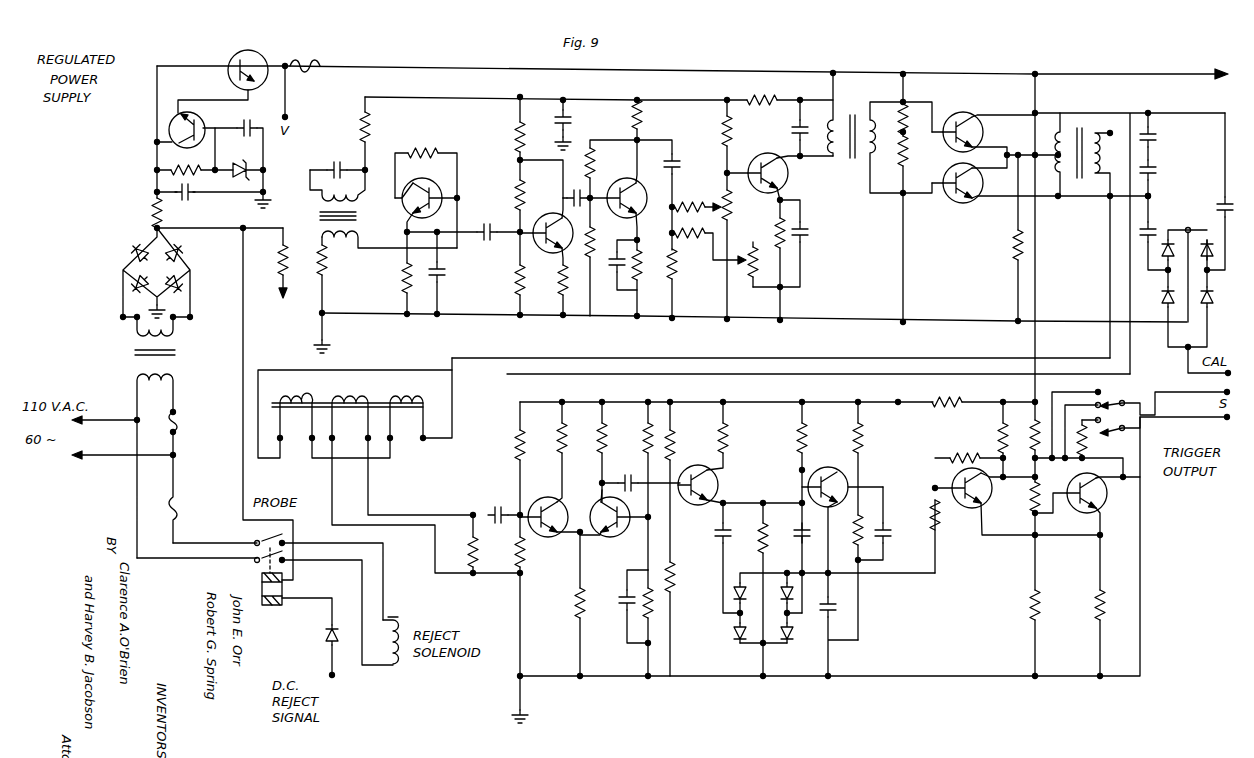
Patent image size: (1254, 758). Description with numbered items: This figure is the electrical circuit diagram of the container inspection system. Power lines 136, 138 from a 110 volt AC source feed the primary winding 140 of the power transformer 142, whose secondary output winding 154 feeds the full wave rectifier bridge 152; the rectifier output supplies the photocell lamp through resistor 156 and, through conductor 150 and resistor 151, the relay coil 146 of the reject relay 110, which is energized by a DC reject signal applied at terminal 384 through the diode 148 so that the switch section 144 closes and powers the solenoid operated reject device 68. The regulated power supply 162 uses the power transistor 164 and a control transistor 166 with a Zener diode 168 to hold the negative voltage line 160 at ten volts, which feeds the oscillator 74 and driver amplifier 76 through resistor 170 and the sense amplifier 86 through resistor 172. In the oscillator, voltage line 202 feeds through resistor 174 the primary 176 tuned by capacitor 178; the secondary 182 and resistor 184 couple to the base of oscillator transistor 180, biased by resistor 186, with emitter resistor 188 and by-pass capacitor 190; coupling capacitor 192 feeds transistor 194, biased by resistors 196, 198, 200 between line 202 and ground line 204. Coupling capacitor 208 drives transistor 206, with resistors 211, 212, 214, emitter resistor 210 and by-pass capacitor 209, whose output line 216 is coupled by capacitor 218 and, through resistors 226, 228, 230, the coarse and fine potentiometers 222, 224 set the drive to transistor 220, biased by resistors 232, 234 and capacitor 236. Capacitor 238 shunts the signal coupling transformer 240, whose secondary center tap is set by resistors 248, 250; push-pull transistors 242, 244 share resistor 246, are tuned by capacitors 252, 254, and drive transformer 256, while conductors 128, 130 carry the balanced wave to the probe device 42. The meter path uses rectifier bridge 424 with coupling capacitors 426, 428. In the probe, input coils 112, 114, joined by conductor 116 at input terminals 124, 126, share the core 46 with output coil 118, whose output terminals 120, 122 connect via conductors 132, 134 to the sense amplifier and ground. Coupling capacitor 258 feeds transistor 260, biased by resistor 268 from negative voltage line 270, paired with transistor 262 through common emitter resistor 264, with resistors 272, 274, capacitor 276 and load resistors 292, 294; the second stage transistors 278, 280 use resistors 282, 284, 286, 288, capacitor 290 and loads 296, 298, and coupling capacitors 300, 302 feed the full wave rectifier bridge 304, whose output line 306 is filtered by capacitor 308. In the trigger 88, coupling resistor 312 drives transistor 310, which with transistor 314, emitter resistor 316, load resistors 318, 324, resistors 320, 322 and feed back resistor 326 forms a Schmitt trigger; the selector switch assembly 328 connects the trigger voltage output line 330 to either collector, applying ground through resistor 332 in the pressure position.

The regulated power supply 162 is at (65, 117).
The power transistor 164 is at (262, 58).
The control transistor 166 is at (204, 118).
The Zener diode 168 is at (249, 165).
The resistor 151 is at (152, 203).
The full wave rectifier bridge 152 is at (127, 257).
The secondary output winding 154 is at (164, 332).
The power transformer 142 is at (182, 348).
The primary winding 140 is at (156, 466).
The power line 136 is at (107, 418).
The power line 138 is at (118, 458).
The conductor 150 is at (243, 405).
The resistor 156 is at (288, 255).
The resistor 184 is at (319, 271).
The negative voltage line 160 is at (729, 67).
The oscillator 74 is at (391, 331).
The primary 176 is at (359, 204).
The secondary 182 is at (389, 253).
The capacitor 178 is at (328, 162).
The voltage dropping resistor 174 is at (377, 122).
The resistor 186 is at (433, 152).
The oscillator transistor 180 is at (443, 178).
The resistor 188 is at (400, 278).
The by-pass capacitor 190 is at (441, 277).
The coupling capacitor 192 is at (492, 250).
The voltage dividing resistor 196 is at (517, 133).
The voltage dividing resistor 198 is at (515, 197).
The voltage dividing resistor 200 is at (522, 283).
The transistor 194 is at (549, 214).
The voltage line 202 is at (547, 99).
The coupling capacitor 208 is at (574, 190).
The voltage dividing resistor 212 is at (593, 160).
The voltage dividing resistor 211 is at (605, 257).
The transistor 206 is at (626, 195).
The by-pass capacitor 209 is at (610, 278).
The emitter resistor 210 is at (643, 273).
The voltage dividing resistor 214 is at (647, 118).
The coupling capacitor 218 is at (676, 158).
The output line 216 is at (677, 168).
The resistor 226 is at (690, 203).
The resistor 230 is at (708, 238).
The resistor 228 is at (687, 285).
The ground line 204 is at (592, 322).
The conductor 130 is at (527, 357).
The conductor 128 is at (507, 375).
The driver amplifier 76 is at (717, 336).
The resistor 232 is at (733, 131).
The coarse adjustment potentiometer 222 is at (718, 193).
The transistor 220 is at (790, 184).
The resistor 234 is at (777, 241).
The by-pass capacitor 236 is at (806, 238).
The fine adjustment potentiometer 224 is at (748, 279).
The resistor 170 is at (766, 98).
The capacitor 238 is at (793, 131).
The signal coupling transformer 240 is at (851, 160).
The voltage dividing resistor 248 is at (907, 129).
The voltage dividing resistor 250 is at (898, 163).
The transistor 242 is at (970, 114).
The transistor 244 is at (960, 203).
The resistor 246 is at (1012, 253).
The transformer 256 is at (1082, 198).
The capacitor 252 is at (1163, 138).
The capacitor 254 is at (1163, 173).
The coupling capacitor 426 is at (1167, 223).
The coupling capacitor 428 is at (1222, 205).
The full wave rectifier bridge 424 is at (1217, 296).
The input end coil 112 is at (300, 397).
The central output coil 118 is at (362, 399).
The input end coil 114 is at (403, 399).
The core 46 is at (442, 399).
The output terminal 122 is at (365, 436).
The output terminal 120 is at (350, 451).
The conductor 116 is at (373, 460).
The input terminal 124 is at (296, 446).
The input terminal 126 is at (428, 442).
The probe device 42 is at (424, 460).
The conductor 132 is at (420, 514).
The conductor 134 is at (437, 578).
The coupling capacitor 258 is at (490, 505).
The voltage dividing resistor 268 is at (524, 450).
The switch section 144 is at (259, 529).
The relay coil 146 is at (262, 583).
The reject relay 110 is at (284, 609).
The diode 148 is at (323, 638).
The DC reject signal terminal 384 is at (336, 679).
The solenoid operated reject device 68 is at (396, 670).
The sense amplifier 86 is at (719, 711).
The negative voltage line 270 is at (710, 401).
The transistor 260 is at (555, 534).
The resistor 292 is at (564, 436).
The resistor 294 is at (600, 446).
The transistor 262 is at (610, 538).
The common emitter resistor 264 is at (577, 600).
The capacitor 276 is at (628, 474).
The voltage dividing resistor 272 is at (647, 438).
The voltage dividing resistor 274 is at (653, 617).
The voltage dividing resistor 282 is at (672, 410).
The voltage dividing resistor 284 is at (672, 570).
The input transistor 278 is at (693, 466).
The resistor 296 is at (728, 443).
The coupling capacitor 300 is at (713, 531).
The full wave rectifier bridge 304 is at (733, 630).
The resistor 298 is at (797, 438).
The coupling capacitor 302 is at (807, 538).
The output transistor 280 is at (820, 467).
The filter capacitor 308 is at (823, 620).
The voltage dividing resistor 286 is at (863, 437).
The voltage dividing resistor 288 is at (851, 533).
The by-pass capacitor 290 is at (915, 547).
The output line 306 is at (903, 578).
The trigger 88 is at (994, 711).
The coupling resistor 312 is at (930, 510).
The feed back resistor 326 is at (956, 458).
The transistor 310 is at (972, 506).
The resistor 318 is at (1000, 440).
The resistor 172 is at (948, 410).
The resistor 324 is at (1030, 412).
The resistor 320 is at (1027, 497).
The resistor 322 is at (1027, 612).
The transistor 314 is at (1104, 508).
The resistor 316 is at (1090, 598).
The selector switch assembly 328 is at (1117, 393).
The resistor 332 is at (1085, 439).
The trigger voltage output line 330 is at (1205, 420).